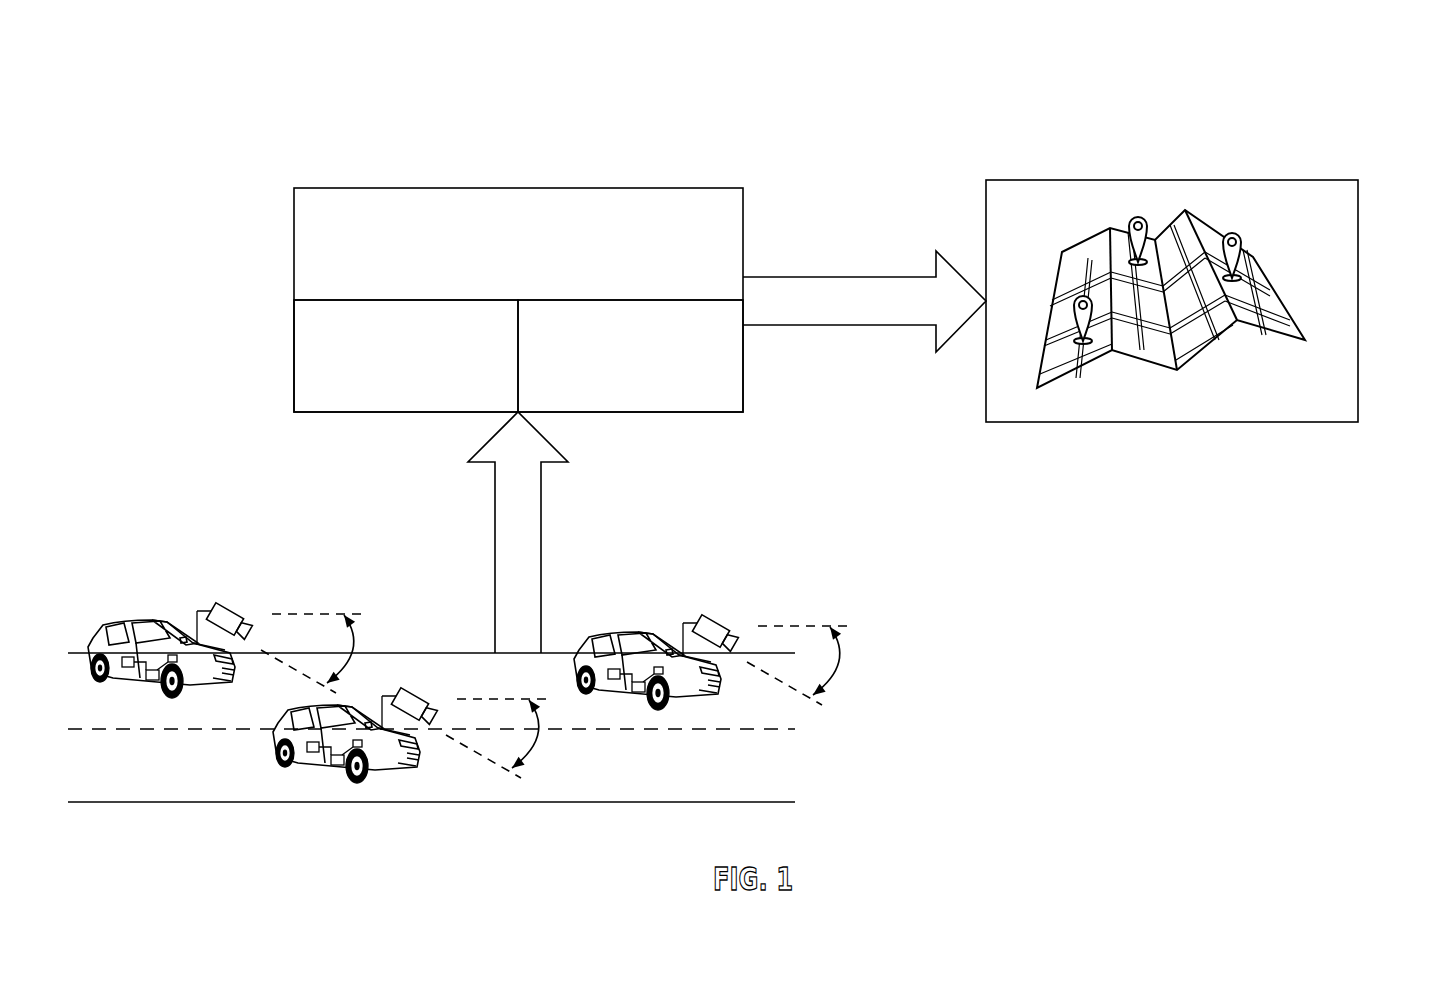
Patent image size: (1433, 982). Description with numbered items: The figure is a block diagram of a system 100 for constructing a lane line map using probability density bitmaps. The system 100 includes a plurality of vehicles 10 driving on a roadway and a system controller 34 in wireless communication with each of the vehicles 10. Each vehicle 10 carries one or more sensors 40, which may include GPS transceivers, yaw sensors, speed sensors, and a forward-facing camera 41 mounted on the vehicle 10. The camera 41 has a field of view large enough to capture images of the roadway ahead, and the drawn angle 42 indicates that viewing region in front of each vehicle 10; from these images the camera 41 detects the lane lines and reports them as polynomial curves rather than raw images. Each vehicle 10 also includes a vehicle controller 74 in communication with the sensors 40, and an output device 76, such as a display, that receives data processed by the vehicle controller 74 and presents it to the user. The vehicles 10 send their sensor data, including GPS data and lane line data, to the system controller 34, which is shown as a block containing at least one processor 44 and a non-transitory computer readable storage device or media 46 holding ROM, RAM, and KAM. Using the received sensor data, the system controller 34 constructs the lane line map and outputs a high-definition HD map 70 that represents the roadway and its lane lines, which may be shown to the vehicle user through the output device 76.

The system 100 is at (1350, 66).
The vehicle 10 is at (150, 618).
The system controller 34 is at (509, 187).
The processor 44 is at (392, 372).
The computer readable storage device or media 46 is at (616, 372).
The HD map 70 is at (1165, 179).
The forward-facing camera 41 is at (225, 606).
The camera view angle 42 is at (348, 640).
The output device 76 is at (122, 684).
The sensor 40 is at (157, 684).
The vehicle controller 74 is at (185, 688).